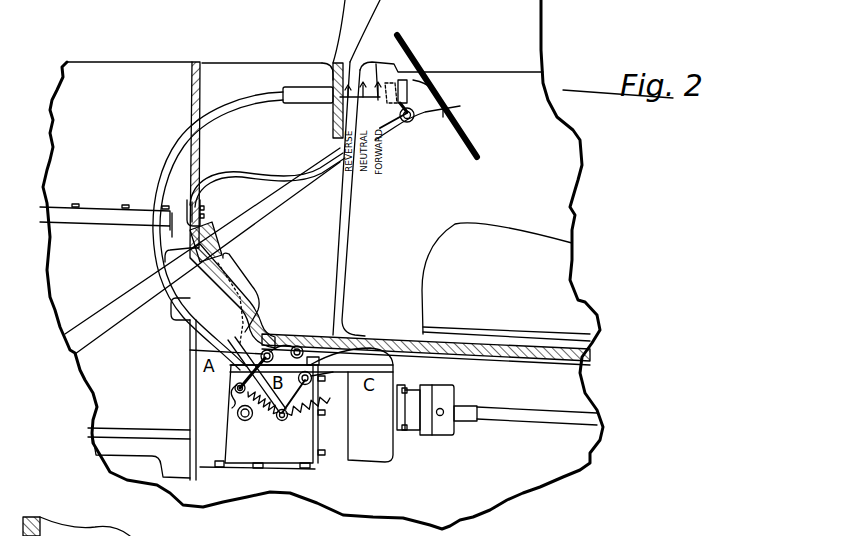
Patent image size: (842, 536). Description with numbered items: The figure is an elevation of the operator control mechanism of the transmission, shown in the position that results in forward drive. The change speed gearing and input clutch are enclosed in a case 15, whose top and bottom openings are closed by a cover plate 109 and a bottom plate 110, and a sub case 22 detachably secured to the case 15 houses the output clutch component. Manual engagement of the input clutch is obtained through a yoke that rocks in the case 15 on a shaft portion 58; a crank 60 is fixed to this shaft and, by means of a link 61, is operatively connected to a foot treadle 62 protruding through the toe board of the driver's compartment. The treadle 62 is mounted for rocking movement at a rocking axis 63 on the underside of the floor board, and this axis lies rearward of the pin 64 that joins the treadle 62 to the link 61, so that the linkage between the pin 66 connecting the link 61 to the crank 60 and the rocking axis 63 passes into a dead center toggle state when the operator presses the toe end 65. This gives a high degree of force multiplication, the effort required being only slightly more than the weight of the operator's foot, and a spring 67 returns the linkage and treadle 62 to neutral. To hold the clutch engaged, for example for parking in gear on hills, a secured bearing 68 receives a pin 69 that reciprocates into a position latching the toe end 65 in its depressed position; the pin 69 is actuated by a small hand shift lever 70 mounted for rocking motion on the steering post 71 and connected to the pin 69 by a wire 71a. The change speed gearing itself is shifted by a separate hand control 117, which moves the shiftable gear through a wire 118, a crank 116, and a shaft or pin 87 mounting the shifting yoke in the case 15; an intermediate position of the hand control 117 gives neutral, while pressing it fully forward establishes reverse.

The case 15 is at (309, 416).
The sub case 22 is at (453, 405).
The shaft portion 58 is at (251, 418).
The crank 60 is at (238, 414).
The link 61 is at (236, 381).
The foot treadle 62 is at (263, 305).
The rocking axis 63 is at (300, 346).
The pin 64 is at (220, 350).
The toe end 65 is at (232, 253).
The pin 66 is at (230, 404).
The spring 67 is at (300, 420).
The secured bearing 68 is at (201, 232).
The pin 69 is at (227, 283).
The hand shift lever 70 is at (408, 78).
The steering post 71 is at (400, 138).
The wire 71a is at (268, 176).
The pin 87 is at (313, 380).
The cover plate 109 is at (380, 367).
The bottom plate 110 is at (250, 463).
The crank 116 is at (302, 393).
The hand control 117 is at (378, 80).
The wire 118 is at (222, 99).